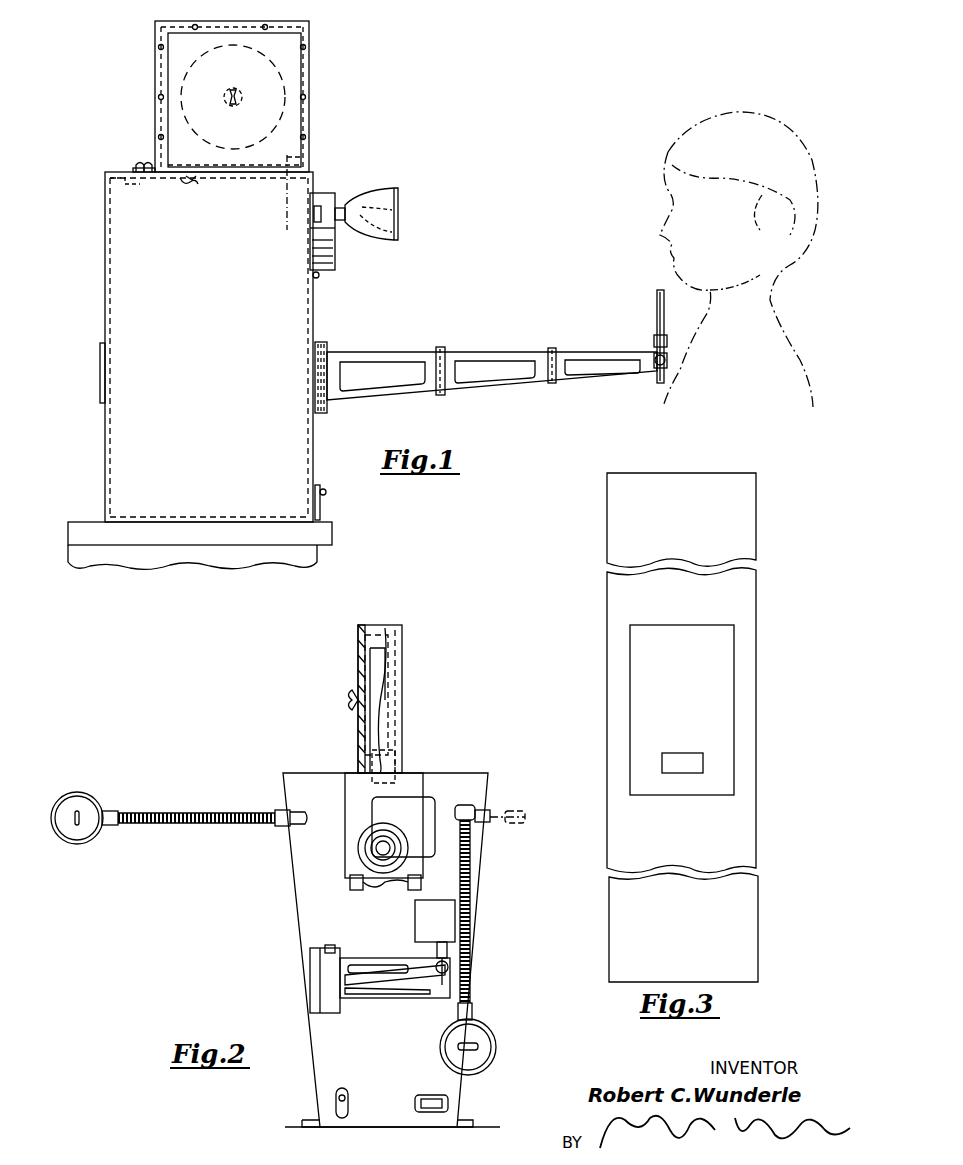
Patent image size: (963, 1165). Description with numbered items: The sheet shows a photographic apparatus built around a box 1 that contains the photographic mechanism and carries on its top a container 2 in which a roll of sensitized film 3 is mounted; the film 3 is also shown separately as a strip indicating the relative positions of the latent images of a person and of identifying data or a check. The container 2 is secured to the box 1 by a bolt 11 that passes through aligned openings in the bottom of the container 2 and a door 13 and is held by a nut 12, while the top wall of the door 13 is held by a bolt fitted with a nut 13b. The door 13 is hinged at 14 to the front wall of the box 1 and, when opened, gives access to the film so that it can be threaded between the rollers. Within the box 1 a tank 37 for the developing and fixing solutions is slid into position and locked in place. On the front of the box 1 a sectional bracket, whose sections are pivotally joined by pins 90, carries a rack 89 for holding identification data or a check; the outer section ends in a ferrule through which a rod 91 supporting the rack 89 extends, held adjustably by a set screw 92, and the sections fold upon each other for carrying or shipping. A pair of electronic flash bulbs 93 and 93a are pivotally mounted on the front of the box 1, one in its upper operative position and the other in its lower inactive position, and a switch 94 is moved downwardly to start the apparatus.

In FIG. 1, the box 1 is at (105, 245).
In FIG. 2, the box 1 is at (285, 770).
In FIG. 1, the container 2 is at (310, 60).
In FIG. 2, the container 2 is at (403, 655).
In FIG. 1, the sensitized film 3 is at (310, 152).
In FIG. 2, the sensitized film 3 is at (362, 733).
In FIG. 3, the sensitized film 3 is at (607, 612).
In FIG. 1, the bolt 11 is at (190, 190).
In FIG. 1, the nut 12 is at (198, 184).
In FIG. 1, the door 13 is at (312, 190).
In FIG. 2, the door 13 is at (345, 830).
In FIG. 1, the nut 13b is at (140, 166).
In FIG. 1, the hinge 14 is at (320, 278).
In FIG. 2, the hinge 14 is at (372, 884).
In FIG. 1, the tank 37 is at (100, 405).
In FIG. 1, the rack 89 is at (658, 295).
In FIG. 2, the rack 89 is at (440, 915).
In FIG. 1, the pins 90 is at (325, 345).
In FIG. 2, the pins 90 is at (328, 948).
In FIG. 1, the rod 91 is at (655, 340).
In FIG. 2, the rod 91 is at (435, 955).
In FIG. 1, the set screw 92 is at (655, 365).
In FIG. 2, the set screw 92 is at (448, 967).
In FIG. 1, the electronic flash bulb 93 is at (398, 190).
In FIG. 2, the electronic flash bulb 93 is at (90, 795).
In FIG. 2, the electronic flash bulb 93a is at (490, 1030).
In FIG. 2, the switch 94 is at (350, 1095).
In FIG. 1, the switch 94 is at (323, 490).